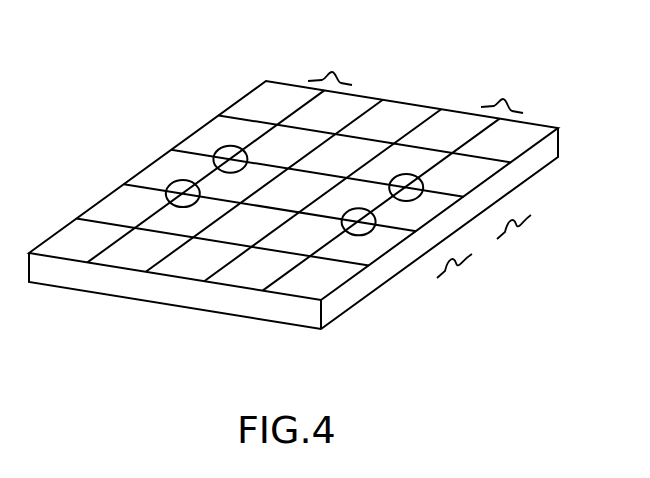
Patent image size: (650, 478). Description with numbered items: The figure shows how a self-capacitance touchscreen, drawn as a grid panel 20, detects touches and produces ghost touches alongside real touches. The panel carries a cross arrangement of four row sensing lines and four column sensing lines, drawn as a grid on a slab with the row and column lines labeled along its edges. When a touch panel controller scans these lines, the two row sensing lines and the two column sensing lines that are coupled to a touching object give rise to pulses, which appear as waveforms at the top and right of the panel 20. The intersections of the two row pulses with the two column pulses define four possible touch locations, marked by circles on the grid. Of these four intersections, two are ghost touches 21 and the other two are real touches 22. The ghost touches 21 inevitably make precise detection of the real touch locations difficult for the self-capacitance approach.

The touch panel 20 is at (160, 23).
The ghost touch 21 is at (173, 188).
The real touch 22 is at (220, 150).